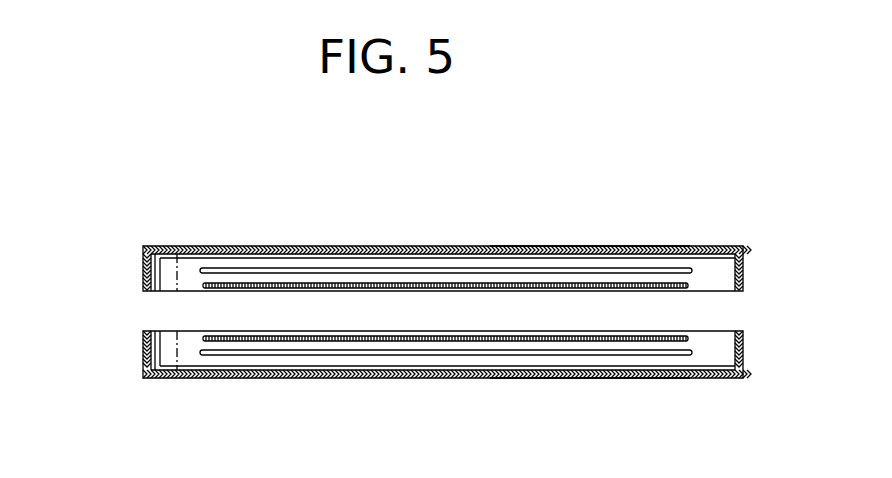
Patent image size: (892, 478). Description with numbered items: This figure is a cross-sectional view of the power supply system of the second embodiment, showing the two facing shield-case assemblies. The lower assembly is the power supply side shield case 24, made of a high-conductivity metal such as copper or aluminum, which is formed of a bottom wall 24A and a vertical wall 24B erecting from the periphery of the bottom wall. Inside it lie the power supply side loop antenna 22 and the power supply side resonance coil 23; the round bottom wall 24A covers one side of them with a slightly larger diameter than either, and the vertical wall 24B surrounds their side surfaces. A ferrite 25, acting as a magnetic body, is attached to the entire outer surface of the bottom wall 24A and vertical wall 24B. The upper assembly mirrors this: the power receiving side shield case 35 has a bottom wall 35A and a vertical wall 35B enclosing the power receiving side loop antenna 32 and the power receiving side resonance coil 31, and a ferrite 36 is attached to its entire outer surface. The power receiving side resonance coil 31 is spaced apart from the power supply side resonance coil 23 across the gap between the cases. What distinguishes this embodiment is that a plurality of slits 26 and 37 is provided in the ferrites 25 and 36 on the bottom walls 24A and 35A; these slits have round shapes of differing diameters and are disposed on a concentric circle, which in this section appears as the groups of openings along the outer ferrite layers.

The power supply side loop antenna 22 is at (421, 355).
The power supply side resonance coil 23 is at (356, 340).
The power supply side shield case 24 is at (388, 379).
The bottom wall 24A is at (185, 366).
The vertical wall 24B is at (146, 350).
The ferrite 25 is at (745, 351).
The slits 26 is at (690, 378).
The power receiving side resonance coil 31 is at (348, 286).
The power receiving side loop antenna 32 is at (416, 270).
The power receiving side shield case 35 is at (394, 245).
The bottom wall 35A is at (168, 246).
The vertical wall 35B is at (148, 268).
The ferrite 36 is at (745, 267).
The slits 37 is at (690, 246).